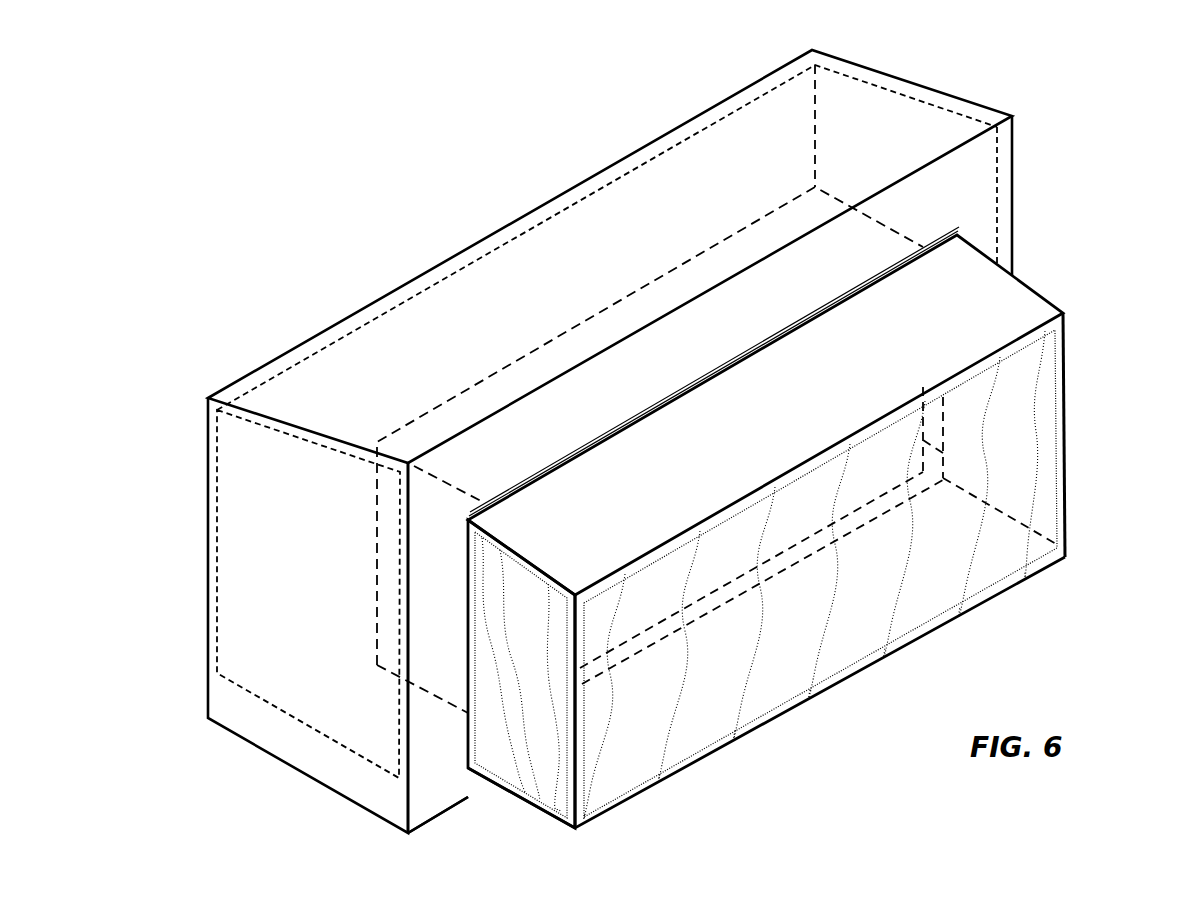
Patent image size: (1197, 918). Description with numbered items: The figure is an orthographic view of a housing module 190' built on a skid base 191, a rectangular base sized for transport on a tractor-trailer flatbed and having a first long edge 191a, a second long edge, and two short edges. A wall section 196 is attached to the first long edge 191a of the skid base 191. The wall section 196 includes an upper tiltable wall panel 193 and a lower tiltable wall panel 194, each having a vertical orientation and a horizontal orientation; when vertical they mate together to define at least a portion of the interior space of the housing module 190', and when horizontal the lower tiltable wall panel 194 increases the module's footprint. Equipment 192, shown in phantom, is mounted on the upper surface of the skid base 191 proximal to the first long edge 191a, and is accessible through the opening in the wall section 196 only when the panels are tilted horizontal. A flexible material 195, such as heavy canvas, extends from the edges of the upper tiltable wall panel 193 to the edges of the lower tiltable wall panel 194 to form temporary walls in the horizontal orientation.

The housing module 190' is at (694, 455).
The skid base 191 is at (306, 753).
The first long edge 191a is at (445, 795).
The equipment 192 is at (689, 358).
The upper tiltable wall panel 193 is at (955, 311).
The lower tiltable wall panel 194 is at (965, 615).
The flexible material 195 is at (1035, 415).
The wall section 196 is at (456, 567).